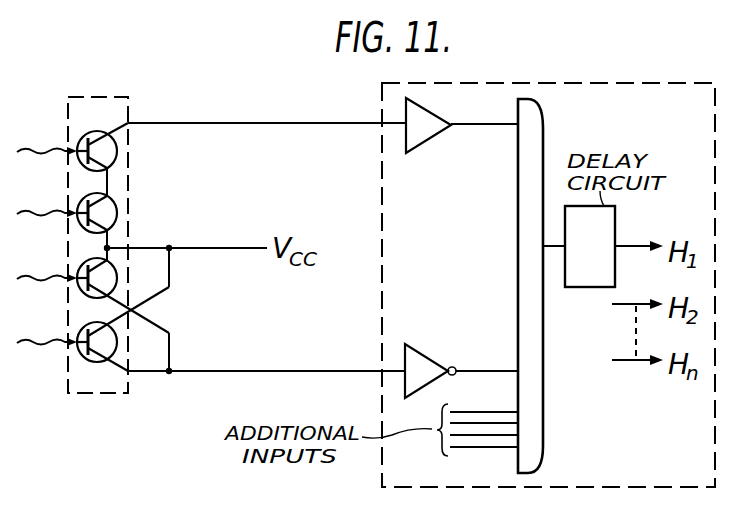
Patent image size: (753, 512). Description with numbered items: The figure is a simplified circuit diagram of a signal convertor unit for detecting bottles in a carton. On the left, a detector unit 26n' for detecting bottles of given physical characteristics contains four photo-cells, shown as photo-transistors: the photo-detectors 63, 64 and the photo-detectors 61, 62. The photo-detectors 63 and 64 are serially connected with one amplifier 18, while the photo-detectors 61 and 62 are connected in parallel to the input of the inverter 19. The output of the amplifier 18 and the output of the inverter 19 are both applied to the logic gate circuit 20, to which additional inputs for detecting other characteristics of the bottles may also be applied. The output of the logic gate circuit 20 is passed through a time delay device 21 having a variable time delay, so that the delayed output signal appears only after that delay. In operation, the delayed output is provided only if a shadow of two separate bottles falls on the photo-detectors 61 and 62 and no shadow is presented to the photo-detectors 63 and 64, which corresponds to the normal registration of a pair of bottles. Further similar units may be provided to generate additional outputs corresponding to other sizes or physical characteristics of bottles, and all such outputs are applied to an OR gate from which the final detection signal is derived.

The detector unit 26n' is at (99, 226).
The photo-detector 63 is at (110, 153).
The photo-detector 64 is at (110, 215).
The photo-detector 61 is at (108, 270).
The photo-detector 62 is at (110, 342).
The amplifier 18 is at (428, 125).
The inverter 19 is at (430, 371).
The logic gate circuit 20 is at (520, 250).
The time delay device 21 is at (606, 278).